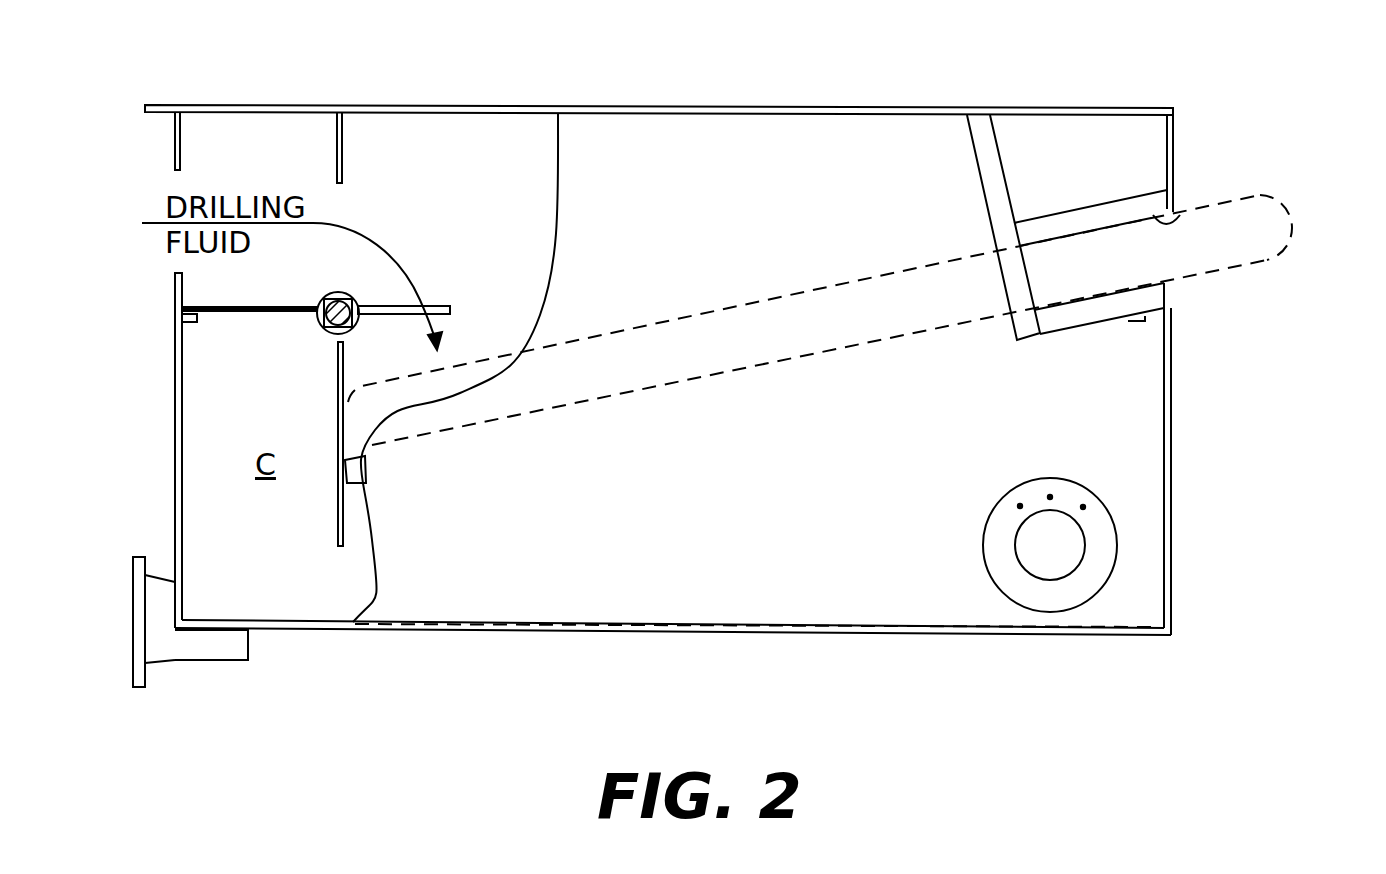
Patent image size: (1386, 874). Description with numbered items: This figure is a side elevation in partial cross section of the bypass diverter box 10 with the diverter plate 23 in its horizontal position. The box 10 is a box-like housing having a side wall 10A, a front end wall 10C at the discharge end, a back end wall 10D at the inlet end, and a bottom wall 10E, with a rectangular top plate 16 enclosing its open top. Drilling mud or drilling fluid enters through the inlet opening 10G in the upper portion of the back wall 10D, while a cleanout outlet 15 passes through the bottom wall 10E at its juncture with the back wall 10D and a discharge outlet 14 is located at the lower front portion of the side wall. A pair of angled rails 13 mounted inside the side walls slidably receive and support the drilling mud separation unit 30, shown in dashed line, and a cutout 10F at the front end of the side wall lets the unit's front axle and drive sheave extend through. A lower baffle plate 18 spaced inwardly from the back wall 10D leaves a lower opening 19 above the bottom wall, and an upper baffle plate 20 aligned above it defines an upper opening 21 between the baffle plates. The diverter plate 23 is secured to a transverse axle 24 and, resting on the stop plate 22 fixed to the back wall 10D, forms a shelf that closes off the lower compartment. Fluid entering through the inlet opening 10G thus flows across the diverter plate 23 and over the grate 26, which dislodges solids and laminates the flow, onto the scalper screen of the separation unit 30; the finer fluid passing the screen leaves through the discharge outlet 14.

The bypass diverter box 10 is at (896, 82).
The side wall 10A is at (721, 469).
The front end wall 10C is at (1171, 442).
The back end wall 10D is at (175, 462).
The bottom wall 10E is at (680, 632).
The cutout 10F is at (1180, 215).
The inlet opening 10G is at (175, 170).
The rail 13 is at (362, 467).
The discharge outlet 14 is at (1080, 536).
The cleanout outlet 15 is at (217, 653).
The top plate 16 is at (680, 107).
The lower baffle plate 18 is at (335, 382).
The lower opening 19 is at (338, 556).
The upper baffle plate 20 is at (342, 168).
The upper opening 21 is at (340, 205).
The stop plate 22 is at (193, 323).
The diverter plate 23 is at (250, 306).
The transverse axle 24 is at (315, 323).
The grate 26 is at (418, 307).
The drilling mud separation unit 30 is at (1292, 177).